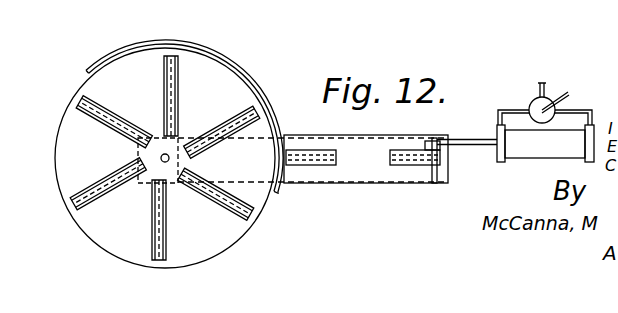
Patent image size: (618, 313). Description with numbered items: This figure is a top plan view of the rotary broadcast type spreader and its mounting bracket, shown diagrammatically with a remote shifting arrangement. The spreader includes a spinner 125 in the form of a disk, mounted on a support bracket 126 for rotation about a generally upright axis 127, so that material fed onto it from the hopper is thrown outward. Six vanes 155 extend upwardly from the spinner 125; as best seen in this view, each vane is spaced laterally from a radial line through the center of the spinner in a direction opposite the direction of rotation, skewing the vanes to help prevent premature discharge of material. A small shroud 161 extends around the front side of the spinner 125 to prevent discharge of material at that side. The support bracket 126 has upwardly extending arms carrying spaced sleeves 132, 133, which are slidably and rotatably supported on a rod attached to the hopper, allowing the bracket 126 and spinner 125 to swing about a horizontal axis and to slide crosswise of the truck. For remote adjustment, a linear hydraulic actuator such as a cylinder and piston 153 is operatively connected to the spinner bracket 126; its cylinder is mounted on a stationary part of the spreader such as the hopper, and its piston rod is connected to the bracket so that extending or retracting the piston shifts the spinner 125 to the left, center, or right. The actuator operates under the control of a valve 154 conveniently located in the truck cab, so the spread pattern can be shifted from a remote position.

The spinner 125 is at (233, 230).
The shroud 161 is at (174, 46).
The vanes 155 is at (112, 172).
The upright axis 127 is at (166, 162).
The support bracket 126 is at (348, 183).
The sleeve 133 is at (329, 150).
The sleeve 132 is at (416, 150).
The cylinder 153 is at (538, 146).
The valve 154 is at (533, 105).